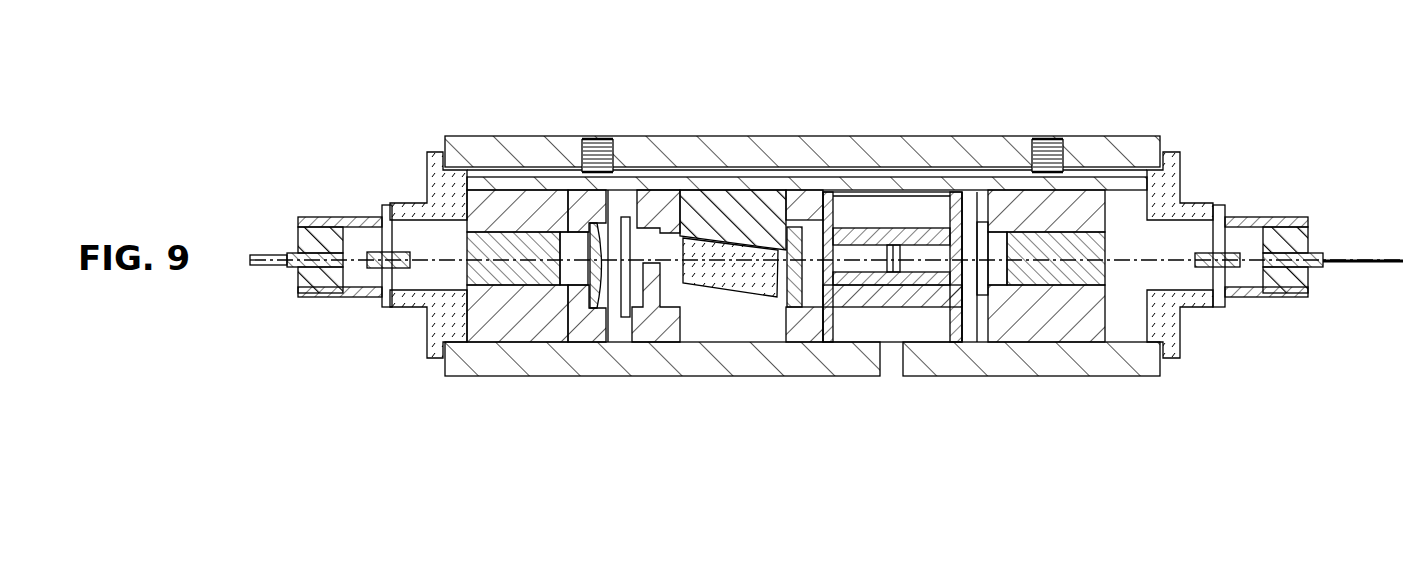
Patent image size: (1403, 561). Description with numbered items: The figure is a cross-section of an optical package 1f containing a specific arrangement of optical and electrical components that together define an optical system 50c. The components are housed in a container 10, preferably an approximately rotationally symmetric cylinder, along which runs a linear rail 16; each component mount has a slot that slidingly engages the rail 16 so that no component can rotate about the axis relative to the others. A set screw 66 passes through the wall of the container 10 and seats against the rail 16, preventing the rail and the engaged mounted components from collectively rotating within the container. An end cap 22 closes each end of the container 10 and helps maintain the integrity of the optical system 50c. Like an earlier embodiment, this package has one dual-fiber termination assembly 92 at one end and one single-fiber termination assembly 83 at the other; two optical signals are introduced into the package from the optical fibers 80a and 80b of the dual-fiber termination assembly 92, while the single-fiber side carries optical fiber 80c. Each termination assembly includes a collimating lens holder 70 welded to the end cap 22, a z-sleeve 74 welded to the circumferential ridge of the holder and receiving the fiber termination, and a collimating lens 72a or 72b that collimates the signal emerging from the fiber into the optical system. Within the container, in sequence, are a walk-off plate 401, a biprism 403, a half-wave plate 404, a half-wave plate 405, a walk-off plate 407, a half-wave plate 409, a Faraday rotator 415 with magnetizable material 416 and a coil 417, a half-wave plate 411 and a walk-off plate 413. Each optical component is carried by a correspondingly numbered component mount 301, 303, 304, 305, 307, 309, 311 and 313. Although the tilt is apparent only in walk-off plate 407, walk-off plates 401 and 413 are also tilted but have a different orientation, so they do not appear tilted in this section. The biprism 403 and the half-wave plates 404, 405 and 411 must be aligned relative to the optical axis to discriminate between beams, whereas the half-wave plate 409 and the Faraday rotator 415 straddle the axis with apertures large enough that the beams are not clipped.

The optical package 1f is at (448, 68).
The container 10 is at (460, 137).
The rail 16 is at (1135, 183).
The end cap 22 is at (430, 185).
The optical system 50c is at (1163, 430).
The set screw 66 is at (600, 137).
The collimating lens holder 70 is at (363, 217).
The collimating lens 72a is at (402, 253).
The collimating lens 72b is at (1200, 253).
The z-sleeve 74 is at (326, 298).
The optical fiber 80a is at (267, 254).
The optical fiber 80b is at (273, 268).
The optical fiber 80c is at (1343, 267).
The single-fiber termination assembly 83 is at (1327, 181).
The dual-fiber termination assembly 92 is at (321, 182).
The component mount 301 is at (505, 200).
The component mount 303 is at (580, 195).
The component mount 304 is at (630, 215).
The component mount 305 is at (660, 192).
The component mount 307 is at (745, 200).
The component mount 309 is at (805, 195).
The component mount 311 is at (982, 250).
The component mount 313 is at (1082, 215).
The walk-off plate 401 is at (540, 275).
The biprism 403 is at (598, 305).
The λ/2 plate 404 is at (628, 318).
The λ/2 plate 405 is at (663, 300).
The walk-off plate 407 is at (750, 300).
The λ/2 plate 409 is at (781, 308).
The λ/2 plate 411 is at (983, 297).
The walk-off plate 413 is at (1065, 277).
The Faraday rotator 415 is at (900, 252).
The magnetizable material 416 is at (866, 230).
The coil 417 is at (890, 327).